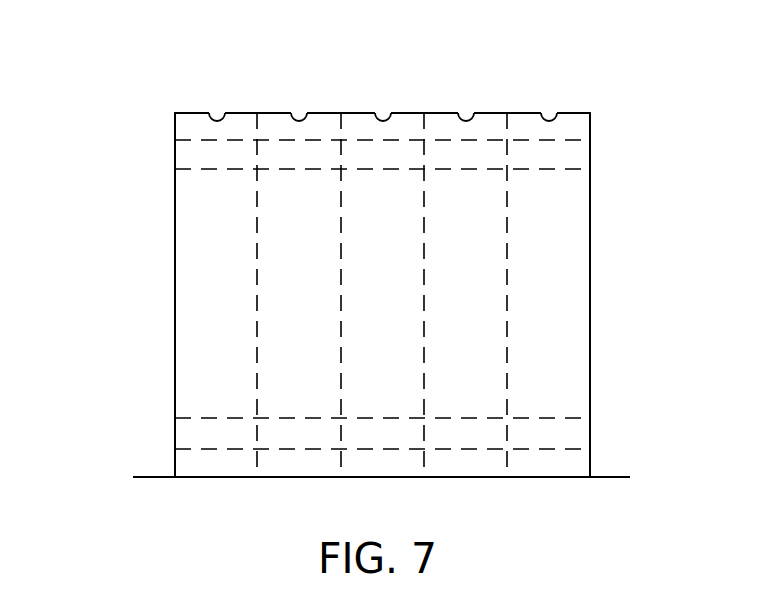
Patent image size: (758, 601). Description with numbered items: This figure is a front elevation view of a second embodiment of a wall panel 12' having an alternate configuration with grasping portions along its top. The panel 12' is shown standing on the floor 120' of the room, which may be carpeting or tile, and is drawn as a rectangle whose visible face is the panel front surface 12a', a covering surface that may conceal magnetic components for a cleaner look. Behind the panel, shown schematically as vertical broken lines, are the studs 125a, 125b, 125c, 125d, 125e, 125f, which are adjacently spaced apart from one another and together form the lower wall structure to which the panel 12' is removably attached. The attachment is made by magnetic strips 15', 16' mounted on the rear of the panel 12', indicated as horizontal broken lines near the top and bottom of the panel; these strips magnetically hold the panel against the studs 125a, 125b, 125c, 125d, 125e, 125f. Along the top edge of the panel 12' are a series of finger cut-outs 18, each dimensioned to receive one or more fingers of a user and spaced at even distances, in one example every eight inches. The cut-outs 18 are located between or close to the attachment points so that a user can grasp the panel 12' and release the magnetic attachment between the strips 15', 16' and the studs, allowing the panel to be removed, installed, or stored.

The panel 12' is at (303, 289).
The panel front surface 12a' is at (598, 295).
The magnetic strip 15' is at (354, 194).
The magnetic strip 16' is at (341, 406).
The finger cut-out 18 is at (299, 111).
The floor 120' is at (417, 457).
The stud 125a is at (357, 93).
The stud 125b is at (425, 113).
The stud 125c is at (508, 113).
The stud 125d is at (176, 113).
The stud 125e is at (258, 113).
The stud 125f is at (590, 113).